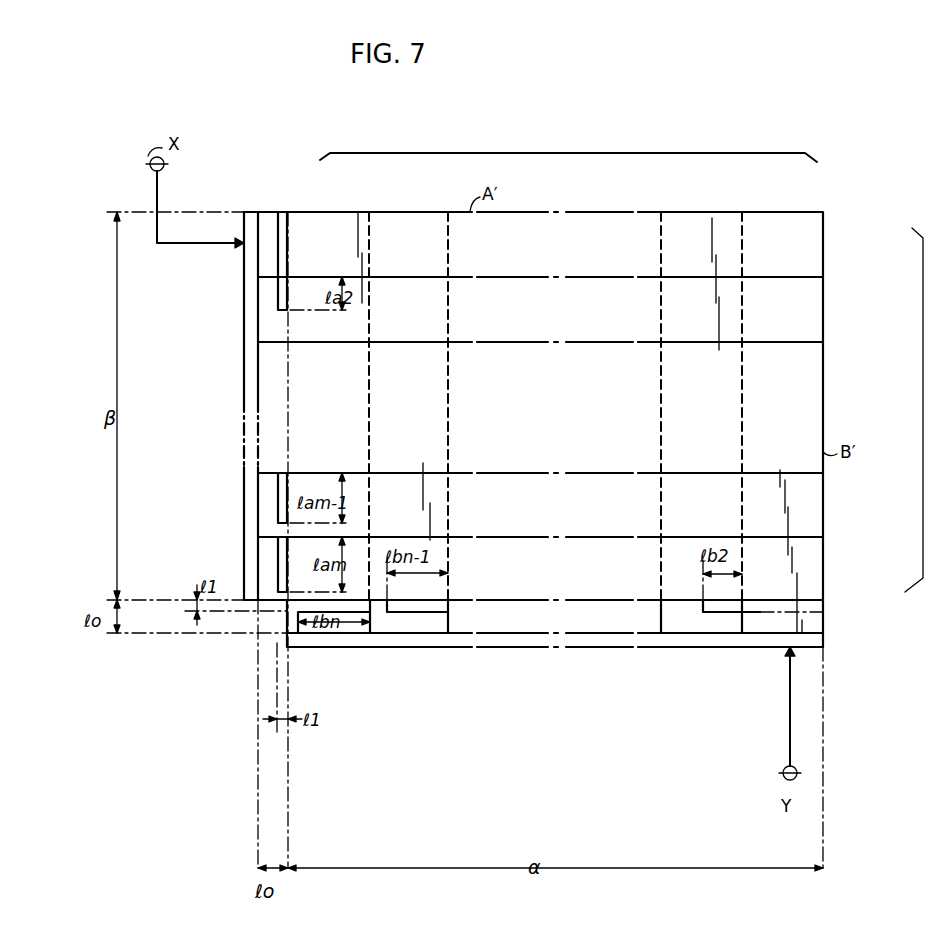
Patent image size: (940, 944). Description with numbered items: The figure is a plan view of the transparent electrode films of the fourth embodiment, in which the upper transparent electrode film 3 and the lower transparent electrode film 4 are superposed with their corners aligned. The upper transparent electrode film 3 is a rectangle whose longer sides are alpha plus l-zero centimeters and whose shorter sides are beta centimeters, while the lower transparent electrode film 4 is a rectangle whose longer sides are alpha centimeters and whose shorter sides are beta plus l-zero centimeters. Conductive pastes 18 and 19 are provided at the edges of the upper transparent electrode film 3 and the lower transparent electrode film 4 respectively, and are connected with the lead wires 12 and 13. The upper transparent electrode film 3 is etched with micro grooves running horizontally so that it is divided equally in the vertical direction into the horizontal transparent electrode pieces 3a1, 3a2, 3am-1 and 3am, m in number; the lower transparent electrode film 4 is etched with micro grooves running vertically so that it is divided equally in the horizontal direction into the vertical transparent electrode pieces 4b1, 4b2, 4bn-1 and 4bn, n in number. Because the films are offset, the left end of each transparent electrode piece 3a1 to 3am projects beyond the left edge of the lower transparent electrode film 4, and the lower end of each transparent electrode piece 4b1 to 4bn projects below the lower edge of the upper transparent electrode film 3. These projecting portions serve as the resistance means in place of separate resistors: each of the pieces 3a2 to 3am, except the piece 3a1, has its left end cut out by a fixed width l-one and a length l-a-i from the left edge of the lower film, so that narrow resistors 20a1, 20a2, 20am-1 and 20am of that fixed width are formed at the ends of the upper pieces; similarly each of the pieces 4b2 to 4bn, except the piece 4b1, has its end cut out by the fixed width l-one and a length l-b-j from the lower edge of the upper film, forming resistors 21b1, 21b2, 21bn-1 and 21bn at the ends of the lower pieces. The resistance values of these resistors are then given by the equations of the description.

The upper transparent electrode film 3 is at (919, 410).
The transparent electrode piece 3a1 is at (823, 255).
The transparent electrode piece 3a2 is at (823, 312).
The transparent electrode piece 3am-1 is at (823, 506).
The transparent electrode piece 3am is at (823, 570).
The lower transparent electrode film 4 is at (568, 145).
The transparent electrode piece 4b1 is at (777, 230).
The transparent electrode piece 4b2 is at (696, 230).
The transparent electrode piece 4bn-1 is at (414, 228).
The transparent electrode piece 4bn is at (356, 224).
The lead wire 12 is at (213, 244).
The lead wire 13 is at (789, 704).
The conductive paste 18 is at (244, 214).
The conductive paste 19 is at (823, 645).
The resistor 20a1 is at (283, 212).
The resistor 20a2 is at (268, 322).
The resistor 20am-1 is at (280, 522).
The resistor 20am is at (277, 591).
The resistor 21b1 is at (815, 612).
The resistor 21b2 is at (694, 620).
The resistor 21bn-1 is at (398, 620).
The resistor 21bn is at (304, 644).